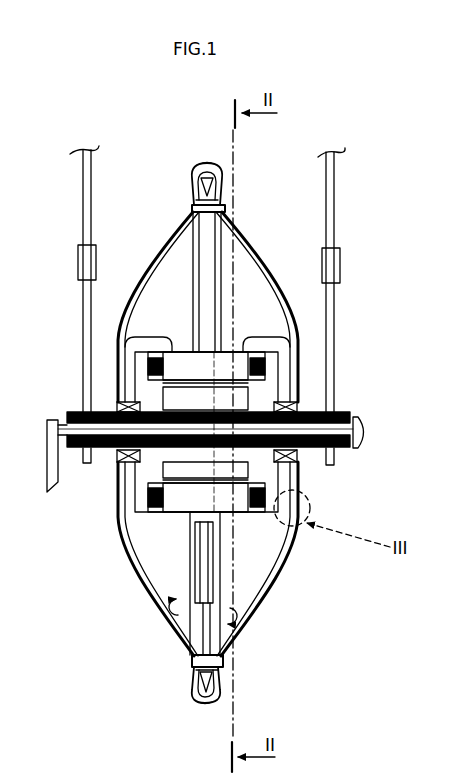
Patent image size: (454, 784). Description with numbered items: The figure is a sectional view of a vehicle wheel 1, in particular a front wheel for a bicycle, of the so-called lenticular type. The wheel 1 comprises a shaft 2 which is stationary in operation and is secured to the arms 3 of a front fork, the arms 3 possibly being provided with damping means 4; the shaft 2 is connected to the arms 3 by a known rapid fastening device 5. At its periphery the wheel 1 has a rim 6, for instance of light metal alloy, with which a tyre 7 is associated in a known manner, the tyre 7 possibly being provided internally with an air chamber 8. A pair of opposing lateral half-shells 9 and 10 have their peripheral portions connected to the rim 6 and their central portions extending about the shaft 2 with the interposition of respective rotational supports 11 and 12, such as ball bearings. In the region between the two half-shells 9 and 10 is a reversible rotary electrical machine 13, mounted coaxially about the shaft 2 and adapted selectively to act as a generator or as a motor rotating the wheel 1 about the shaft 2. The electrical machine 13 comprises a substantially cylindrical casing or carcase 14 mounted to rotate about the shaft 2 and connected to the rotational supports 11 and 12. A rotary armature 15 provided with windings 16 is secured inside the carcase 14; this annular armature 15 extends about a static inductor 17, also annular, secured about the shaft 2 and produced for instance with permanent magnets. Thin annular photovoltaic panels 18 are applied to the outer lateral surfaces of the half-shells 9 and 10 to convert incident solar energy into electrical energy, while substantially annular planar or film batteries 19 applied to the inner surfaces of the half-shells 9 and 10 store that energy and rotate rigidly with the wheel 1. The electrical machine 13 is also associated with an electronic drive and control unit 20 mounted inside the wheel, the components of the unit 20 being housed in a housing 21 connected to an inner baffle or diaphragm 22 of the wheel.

The vehicle wheel 1 is at (213, 373).
The shaft 2 is at (52, 420).
The arms of a front fork 3 is at (85, 187).
The damping means 4 is at (87, 268).
The rapid fastening device 5 is at (378, 423).
The rim 6 is at (224, 202).
The tyre 7 is at (207, 158).
The air chamber 8 is at (193, 200).
The lateral half-shell 9 is at (172, 230).
The lateral half-shell 10 is at (267, 272).
The rotational support 11 is at (118, 406).
The rotational support 12 is at (300, 408).
The reversible rotary electrical machine 13 is at (186, 347).
The casing or carcase 14 is at (228, 348).
The rotary armature 15 is at (118, 337).
The windings 16 is at (267, 365).
The static inductor 17 is at (188, 465).
The photovoltaic panel 18 is at (117, 545).
The planar or thin film battery 19 is at (180, 603).
The electronic drive and control unit 20 is at (190, 568).
The housing 21 is at (213, 578).
The inner baffle or diaphragm 22 is at (207, 257).